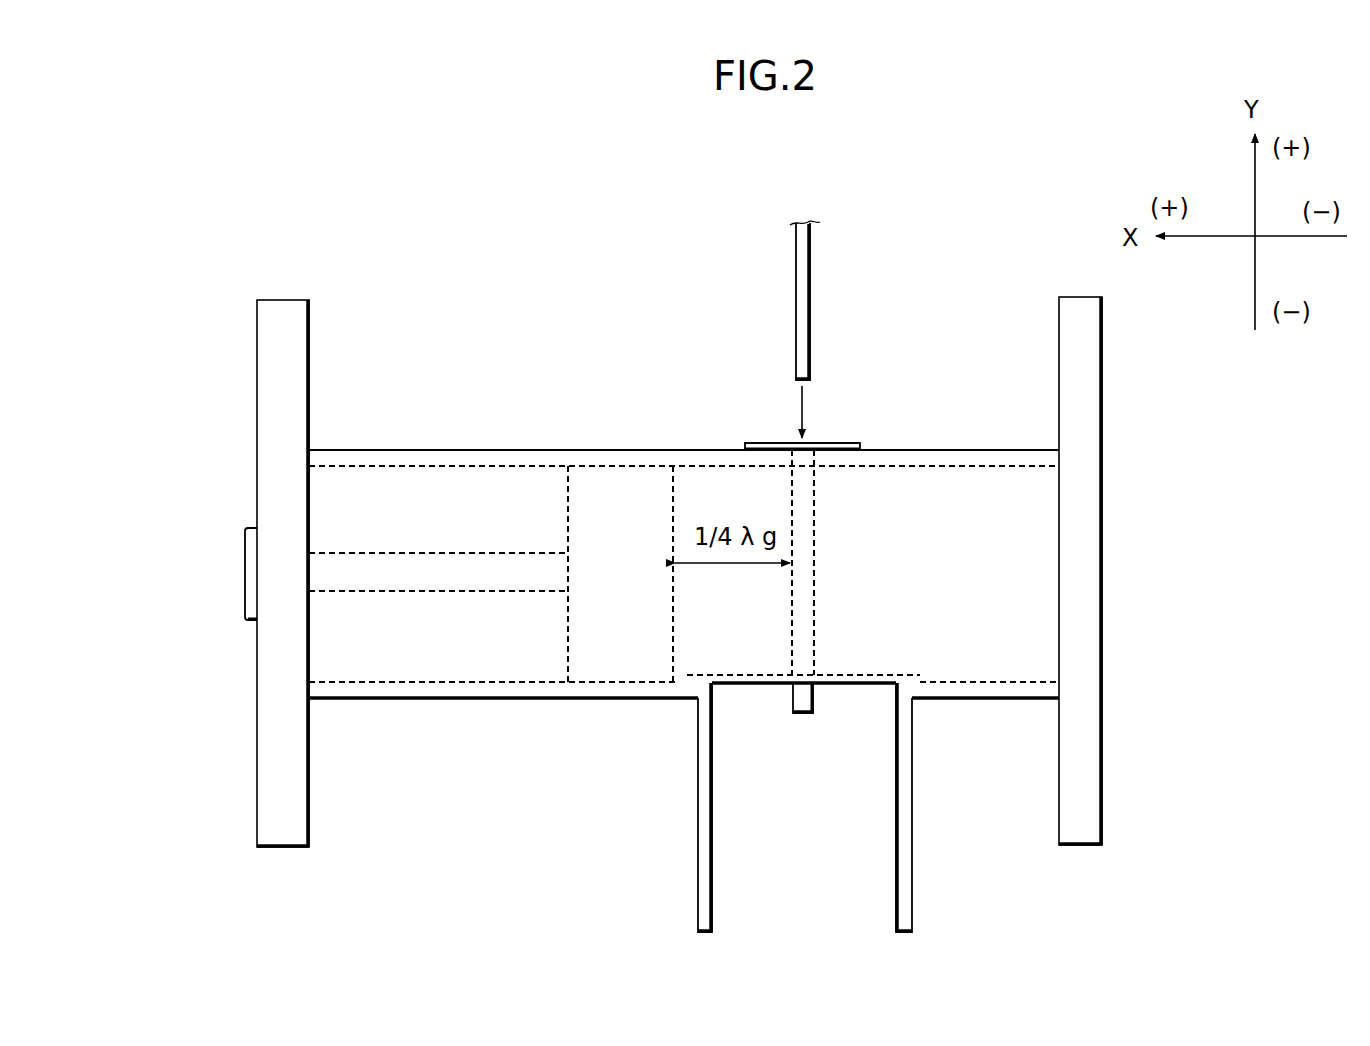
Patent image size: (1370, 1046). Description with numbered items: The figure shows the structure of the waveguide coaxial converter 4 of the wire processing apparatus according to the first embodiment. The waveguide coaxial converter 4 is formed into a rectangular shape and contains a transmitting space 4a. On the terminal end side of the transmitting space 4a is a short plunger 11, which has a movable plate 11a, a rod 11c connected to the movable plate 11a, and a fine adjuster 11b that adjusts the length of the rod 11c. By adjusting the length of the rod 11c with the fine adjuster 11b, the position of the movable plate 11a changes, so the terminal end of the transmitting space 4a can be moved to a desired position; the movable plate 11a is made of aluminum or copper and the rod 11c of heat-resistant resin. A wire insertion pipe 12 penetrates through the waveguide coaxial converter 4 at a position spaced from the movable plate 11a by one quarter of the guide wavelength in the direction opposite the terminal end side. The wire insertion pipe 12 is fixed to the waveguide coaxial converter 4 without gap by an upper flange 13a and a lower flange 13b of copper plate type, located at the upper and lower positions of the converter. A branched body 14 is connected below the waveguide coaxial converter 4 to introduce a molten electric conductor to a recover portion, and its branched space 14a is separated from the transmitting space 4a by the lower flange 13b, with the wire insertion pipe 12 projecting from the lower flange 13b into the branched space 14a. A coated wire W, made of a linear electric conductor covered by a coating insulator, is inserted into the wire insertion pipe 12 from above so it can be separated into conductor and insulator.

The waveguide coaxial converter 4 is at (988, 445).
The transmitting space 4a is at (972, 650).
The short plunger 11 is at (352, 480).
The movable plate 11a is at (617, 480).
The fine adjuster 11b is at (243, 578).
The rod 11c is at (425, 552).
The wire insertion pipe 12 is at (815, 553).
The upper flange 13a is at (770, 443).
The lower flange 13b is at (838, 688).
The branched body 14 is at (705, 841).
The branched space 14a is at (747, 767).
The coated wire W is at (812, 250).